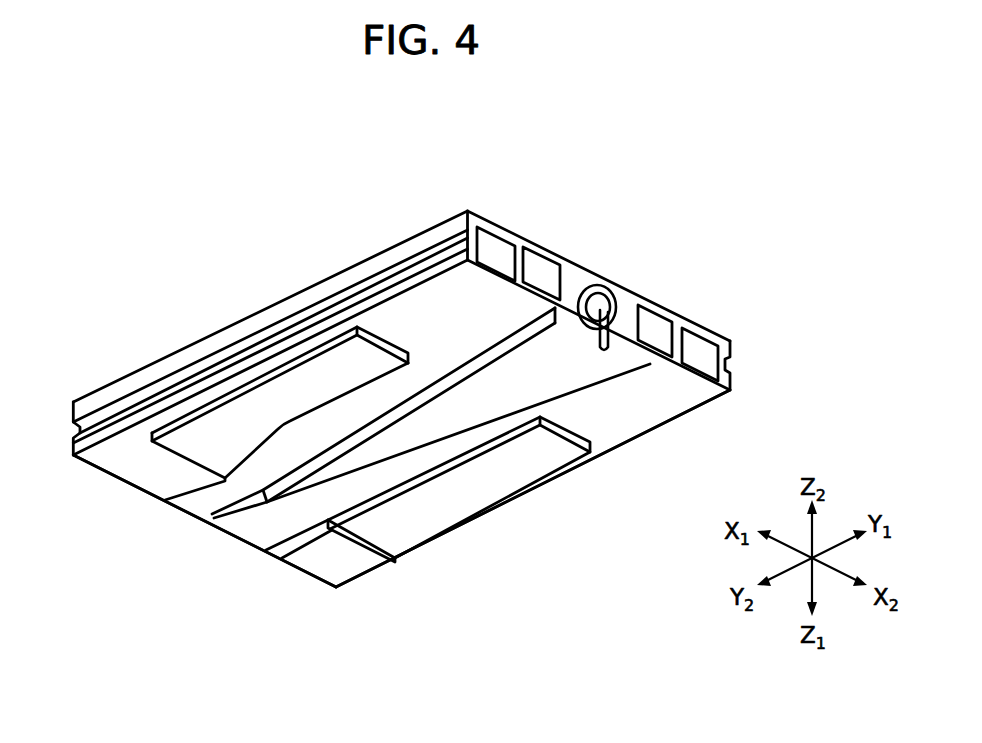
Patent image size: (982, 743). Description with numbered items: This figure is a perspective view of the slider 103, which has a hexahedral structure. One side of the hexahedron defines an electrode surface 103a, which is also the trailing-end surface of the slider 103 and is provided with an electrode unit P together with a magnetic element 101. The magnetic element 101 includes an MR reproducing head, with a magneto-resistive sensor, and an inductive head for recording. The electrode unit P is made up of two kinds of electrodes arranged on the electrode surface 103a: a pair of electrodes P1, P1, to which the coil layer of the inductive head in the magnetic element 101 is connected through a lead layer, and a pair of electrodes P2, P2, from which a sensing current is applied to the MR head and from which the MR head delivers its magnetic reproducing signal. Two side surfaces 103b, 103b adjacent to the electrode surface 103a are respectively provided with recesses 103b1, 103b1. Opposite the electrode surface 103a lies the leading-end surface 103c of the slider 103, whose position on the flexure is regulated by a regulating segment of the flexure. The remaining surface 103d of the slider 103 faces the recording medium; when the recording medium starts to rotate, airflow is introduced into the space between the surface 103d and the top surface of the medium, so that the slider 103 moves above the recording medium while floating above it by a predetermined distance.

The slider 103 is at (269, 285).
The electrode surface 103a is at (572, 280).
The side surface 103b is at (343, 280).
The recess 103b1 is at (429, 258).
The leading-end surface 103c is at (290, 568).
The surface facing the recording medium 103d is at (647, 418).
The magnetic element 101 is at (598, 279).
The electrode unit P is at (615, 232).
The electrode P1 is at (498, 240).
The electrode P2 is at (613, 232).